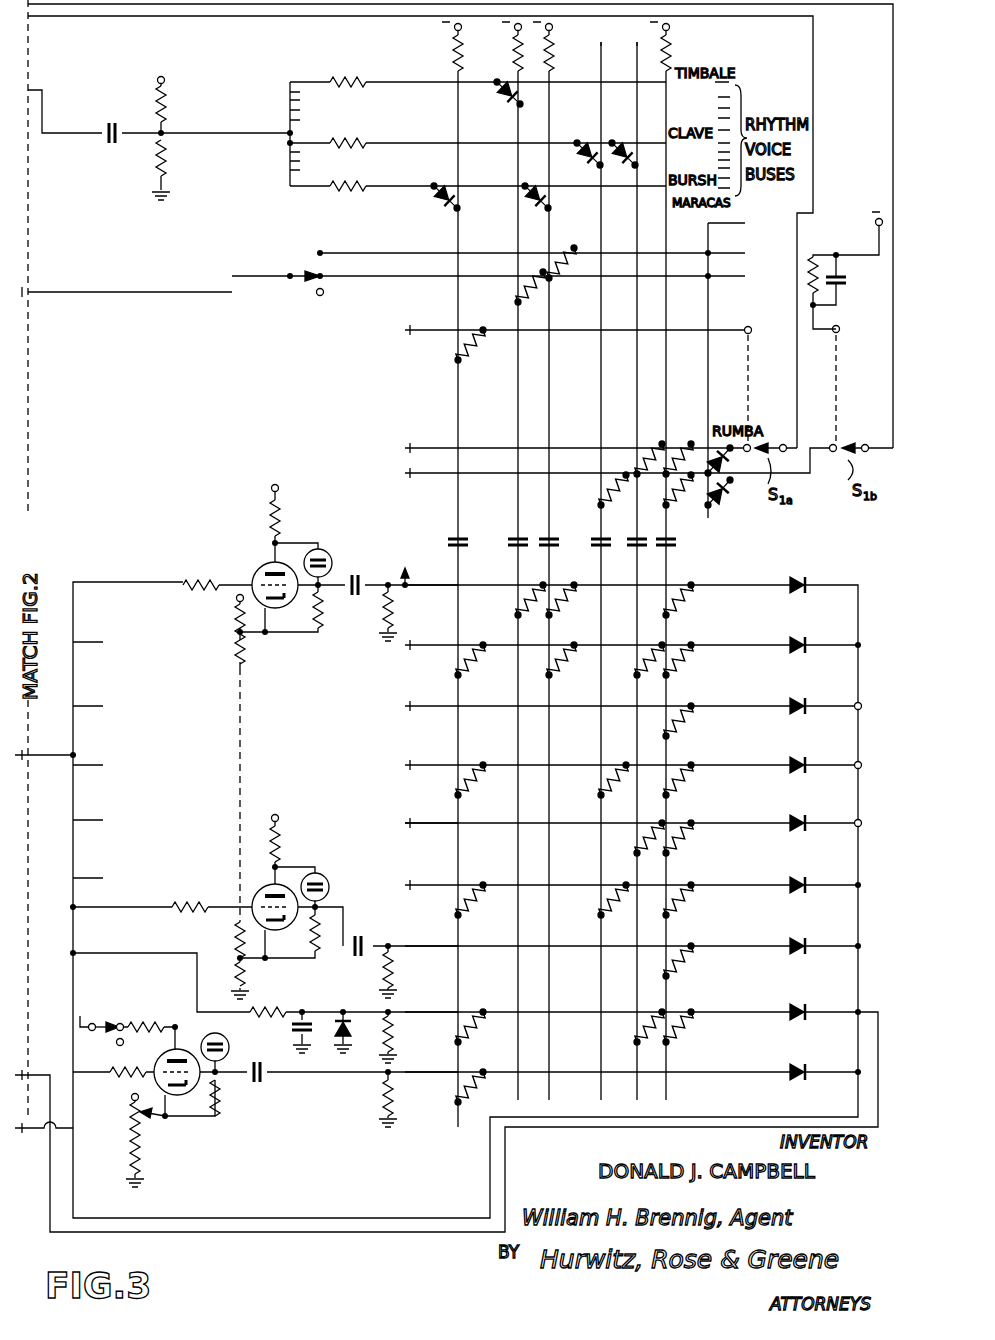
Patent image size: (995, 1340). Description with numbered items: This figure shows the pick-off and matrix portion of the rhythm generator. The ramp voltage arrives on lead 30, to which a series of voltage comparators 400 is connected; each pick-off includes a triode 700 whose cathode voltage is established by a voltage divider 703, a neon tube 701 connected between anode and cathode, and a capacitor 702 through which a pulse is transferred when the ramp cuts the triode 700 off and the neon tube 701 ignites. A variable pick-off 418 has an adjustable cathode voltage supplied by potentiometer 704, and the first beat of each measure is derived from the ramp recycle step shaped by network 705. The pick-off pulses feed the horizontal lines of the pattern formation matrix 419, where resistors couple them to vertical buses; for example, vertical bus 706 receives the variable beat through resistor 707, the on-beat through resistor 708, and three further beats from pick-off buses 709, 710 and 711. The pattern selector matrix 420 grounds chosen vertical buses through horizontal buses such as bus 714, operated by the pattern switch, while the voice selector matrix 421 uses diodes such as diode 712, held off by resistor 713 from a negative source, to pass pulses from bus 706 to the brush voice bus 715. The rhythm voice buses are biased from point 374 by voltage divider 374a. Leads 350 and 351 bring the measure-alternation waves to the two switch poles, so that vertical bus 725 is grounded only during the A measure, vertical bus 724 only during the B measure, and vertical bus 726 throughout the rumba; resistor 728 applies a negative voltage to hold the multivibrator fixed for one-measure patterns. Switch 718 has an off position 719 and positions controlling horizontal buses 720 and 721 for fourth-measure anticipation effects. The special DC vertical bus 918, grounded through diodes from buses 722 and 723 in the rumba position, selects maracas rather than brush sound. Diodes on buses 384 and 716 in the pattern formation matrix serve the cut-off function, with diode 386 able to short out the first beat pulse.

The lead 30 is at (73, 800).
The lead 350 is at (814, 74).
The lead 351 is at (892, 136).
The biasing point 374 is at (226, 133).
The voltage divider 374a is at (174, 104).
The cut-off bus 384 is at (392, 1218).
The diode 386 is at (800, 1010).
The voltage comparators 400 is at (264, 828).
The variable pick-off 418 is at (265, 1092).
The pattern formation matrix 419 is at (446, 904).
The pattern selector matrix 420 is at (425, 400).
The voice selector matrix 421 is at (439, 67).
The triode 700 is at (320, 555).
The neon tube 701 is at (328, 552).
The capacitor 702 is at (352, 602).
The voltage divider 703 is at (234, 626).
The potentiometer 704 is at (130, 1122).
The network 705 is at (258, 1000).
The vertical bus 706 is at (452, 864).
The resistor 707 is at (464, 1096).
The resistor 708 is at (466, 1030).
The horizontal pick-off bus 709 is at (452, 916).
The horizontal pick-off bus 710 is at (430, 779).
The horizontal pick-off bus 711 is at (430, 649).
The diode 712 is at (434, 205).
The resistor 713 is at (474, 57).
The horizontal bus 714 is at (436, 334).
The rhythm voice bus 715 is at (498, 160).
The cut-off bus 716 is at (390, 1232).
The switch 718 is at (297, 272).
The off position 719 is at (315, 296).
The horizontal bus 720 is at (347, 284).
The horizontal bus 721 is at (340, 254).
The horizontal bus 722 is at (466, 448).
The horizontal bus 723 is at (470, 480).
The vertical bus 724 is at (599, 356).
The vertical bus 725 is at (636, 371).
The vertical bus 726 is at (676, 388).
The resistor 728 is at (808, 262).
The DC vertical bus 918 is at (746, 222).